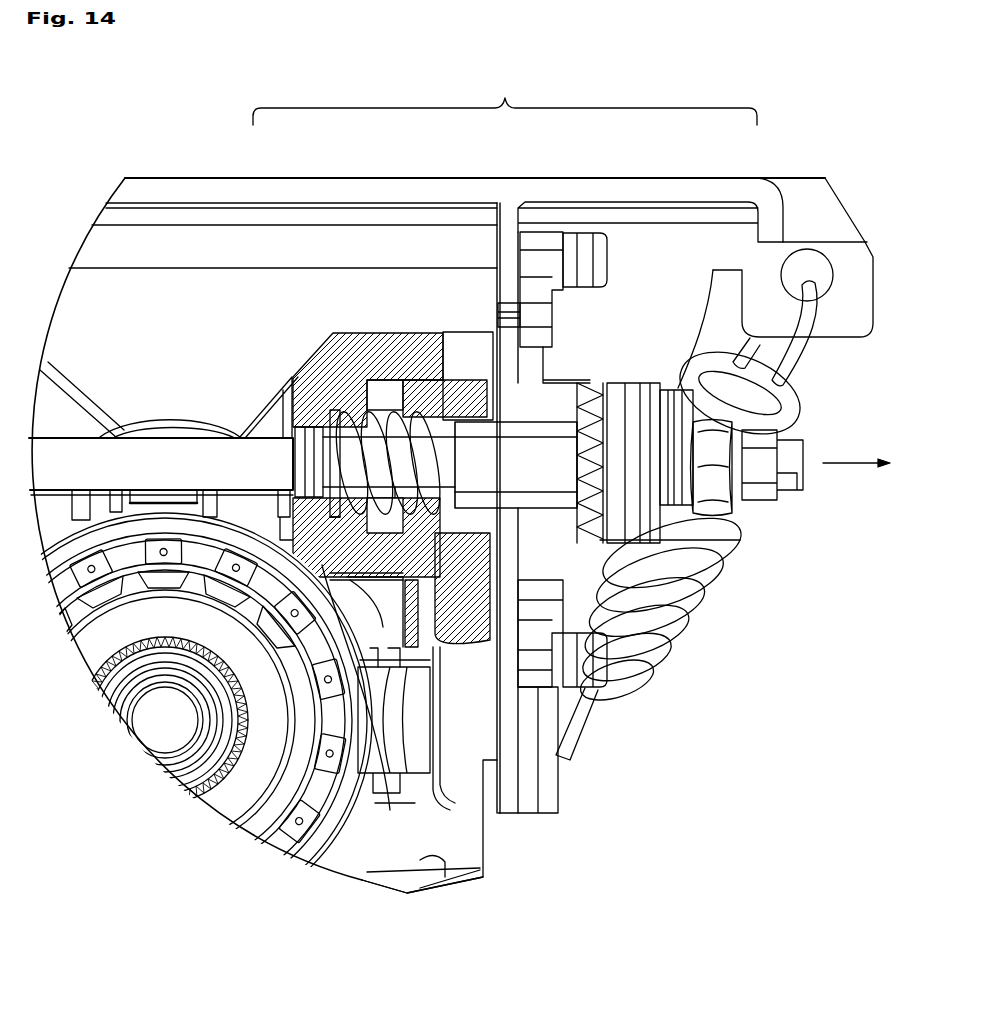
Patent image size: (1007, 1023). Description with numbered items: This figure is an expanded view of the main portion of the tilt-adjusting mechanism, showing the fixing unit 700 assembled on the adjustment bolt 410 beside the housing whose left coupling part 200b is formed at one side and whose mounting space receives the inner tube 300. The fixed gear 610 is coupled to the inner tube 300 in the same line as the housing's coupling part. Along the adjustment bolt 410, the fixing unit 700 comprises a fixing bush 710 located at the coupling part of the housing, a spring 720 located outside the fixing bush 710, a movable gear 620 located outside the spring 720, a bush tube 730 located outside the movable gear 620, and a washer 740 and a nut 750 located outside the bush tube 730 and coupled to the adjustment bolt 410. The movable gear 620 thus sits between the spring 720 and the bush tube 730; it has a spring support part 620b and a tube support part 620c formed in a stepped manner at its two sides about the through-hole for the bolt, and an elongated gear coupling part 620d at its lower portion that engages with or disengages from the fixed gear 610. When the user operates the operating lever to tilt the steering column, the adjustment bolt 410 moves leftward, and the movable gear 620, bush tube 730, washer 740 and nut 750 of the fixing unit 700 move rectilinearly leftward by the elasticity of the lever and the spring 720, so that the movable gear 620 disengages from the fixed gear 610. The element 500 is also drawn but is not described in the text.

The fixing unit 700 is at (505, 98).
The fixing bush 710 is at (308, 437).
The spring 720 is at (362, 425).
The movable gear 620 is at (428, 415).
The bush tube 730 is at (526, 433).
The washer 740 is at (622, 410).
The nut 750 is at (725, 437).
The adjustment bolt 410 is at (168, 457).
The spring support part 620b is at (480, 492).
The tube support part 620c is at (703, 578).
The gear coupling part 620d is at (398, 490).
The rod 500 is at (580, 713).
The fixed gear 610 is at (417, 640).
The left coupling part 200b is at (367, 760).
The inner tube 300 is at (250, 787).